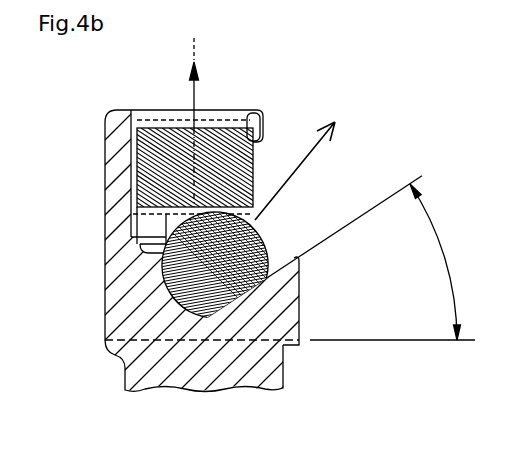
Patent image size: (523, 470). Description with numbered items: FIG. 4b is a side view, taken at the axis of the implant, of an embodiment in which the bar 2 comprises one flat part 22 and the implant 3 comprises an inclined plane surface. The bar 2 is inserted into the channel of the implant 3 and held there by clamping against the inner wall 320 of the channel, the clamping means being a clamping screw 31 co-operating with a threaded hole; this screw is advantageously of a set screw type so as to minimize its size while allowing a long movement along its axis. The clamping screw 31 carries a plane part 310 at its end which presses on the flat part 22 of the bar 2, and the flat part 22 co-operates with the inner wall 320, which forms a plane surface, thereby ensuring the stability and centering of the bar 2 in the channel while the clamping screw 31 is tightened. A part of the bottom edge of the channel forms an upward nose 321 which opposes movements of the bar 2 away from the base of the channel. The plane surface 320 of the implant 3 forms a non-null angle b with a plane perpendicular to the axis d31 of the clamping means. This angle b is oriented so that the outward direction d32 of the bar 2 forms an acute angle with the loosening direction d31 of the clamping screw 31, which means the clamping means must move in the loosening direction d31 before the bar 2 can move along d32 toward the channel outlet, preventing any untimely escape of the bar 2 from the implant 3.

The bar 2 is at (268, 246).
The implant 3 is at (133, 368).
The flat part 22 is at (176, 299).
The clamping screw 31 is at (162, 137).
The plane part 310 is at (143, 218).
The inner wall 320 is at (250, 289).
The upward nose 321 is at (285, 295).
The axis of the clamping means d31 is at (195, 97).
The outward direction of the bar d32 is at (302, 155).
The angle b is at (387, 258).